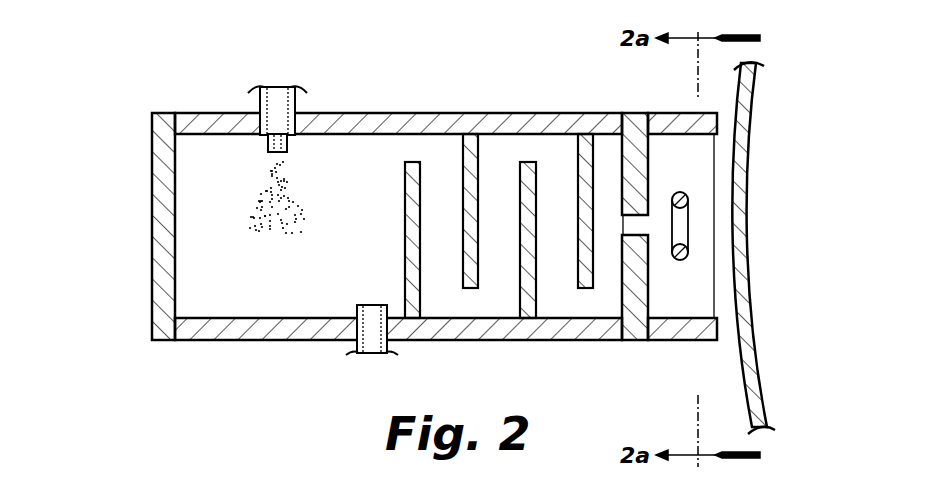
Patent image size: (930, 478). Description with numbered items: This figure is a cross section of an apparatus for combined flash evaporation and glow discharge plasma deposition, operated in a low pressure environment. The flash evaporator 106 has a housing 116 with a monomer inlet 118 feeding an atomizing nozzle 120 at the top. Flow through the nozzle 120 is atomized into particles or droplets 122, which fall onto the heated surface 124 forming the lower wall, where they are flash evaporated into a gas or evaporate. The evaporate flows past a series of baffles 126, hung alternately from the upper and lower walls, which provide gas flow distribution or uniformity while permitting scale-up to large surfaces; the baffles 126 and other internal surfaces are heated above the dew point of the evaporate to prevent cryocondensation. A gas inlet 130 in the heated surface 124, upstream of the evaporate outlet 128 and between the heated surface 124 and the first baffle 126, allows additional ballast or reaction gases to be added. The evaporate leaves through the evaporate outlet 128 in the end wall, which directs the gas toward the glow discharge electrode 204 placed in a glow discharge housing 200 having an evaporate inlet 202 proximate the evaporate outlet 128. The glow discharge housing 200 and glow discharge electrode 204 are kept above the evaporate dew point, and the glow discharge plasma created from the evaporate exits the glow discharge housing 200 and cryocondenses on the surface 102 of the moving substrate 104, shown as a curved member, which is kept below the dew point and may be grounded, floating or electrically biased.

The surface 102 is at (739, 347).
The substrate 104 is at (760, 323).
The flash evaporator 106 is at (124, 232).
The housing 116 is at (394, 113).
The monomer inlet 118 is at (257, 100).
The atomizing nozzle 120 is at (302, 162).
The particles or droplets 122 is at (257, 228).
The heated surface 124 is at (272, 318).
The baffles 126 is at (463, 162).
The evaporate outlet 128 is at (611, 238).
The gas inlet 130 is at (330, 354).
The glow discharge housing 200 is at (723, 98).
The evaporate inlet 202 is at (654, 214).
The glow discharge electrode 204 is at (689, 237).